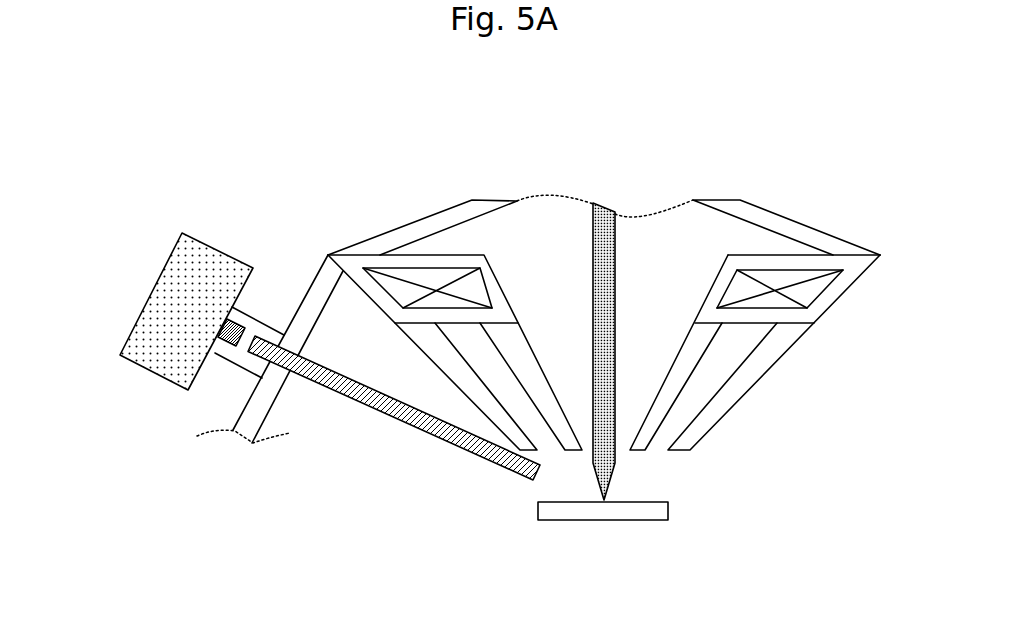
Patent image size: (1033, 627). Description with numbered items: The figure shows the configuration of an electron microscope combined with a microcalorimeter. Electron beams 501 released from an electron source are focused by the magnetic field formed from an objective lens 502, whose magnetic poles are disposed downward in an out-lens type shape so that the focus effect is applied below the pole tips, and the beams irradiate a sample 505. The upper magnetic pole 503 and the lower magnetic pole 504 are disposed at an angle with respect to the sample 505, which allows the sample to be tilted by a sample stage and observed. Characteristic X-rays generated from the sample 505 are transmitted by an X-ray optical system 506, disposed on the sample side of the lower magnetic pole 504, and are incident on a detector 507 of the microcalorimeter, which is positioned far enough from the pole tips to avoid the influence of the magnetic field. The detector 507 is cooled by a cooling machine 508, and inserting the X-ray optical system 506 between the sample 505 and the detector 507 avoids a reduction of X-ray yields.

The electron beams 501 is at (605, 237).
The objective lens 502 is at (805, 288).
The upper magnetic pole 503 is at (682, 362).
The lower magnetic pole 504 is at (753, 365).
The sample 505 is at (602, 507).
The X-ray optical system 506 is at (418, 414).
The detector 507 is at (228, 347).
The cooling machine 508 is at (200, 272).